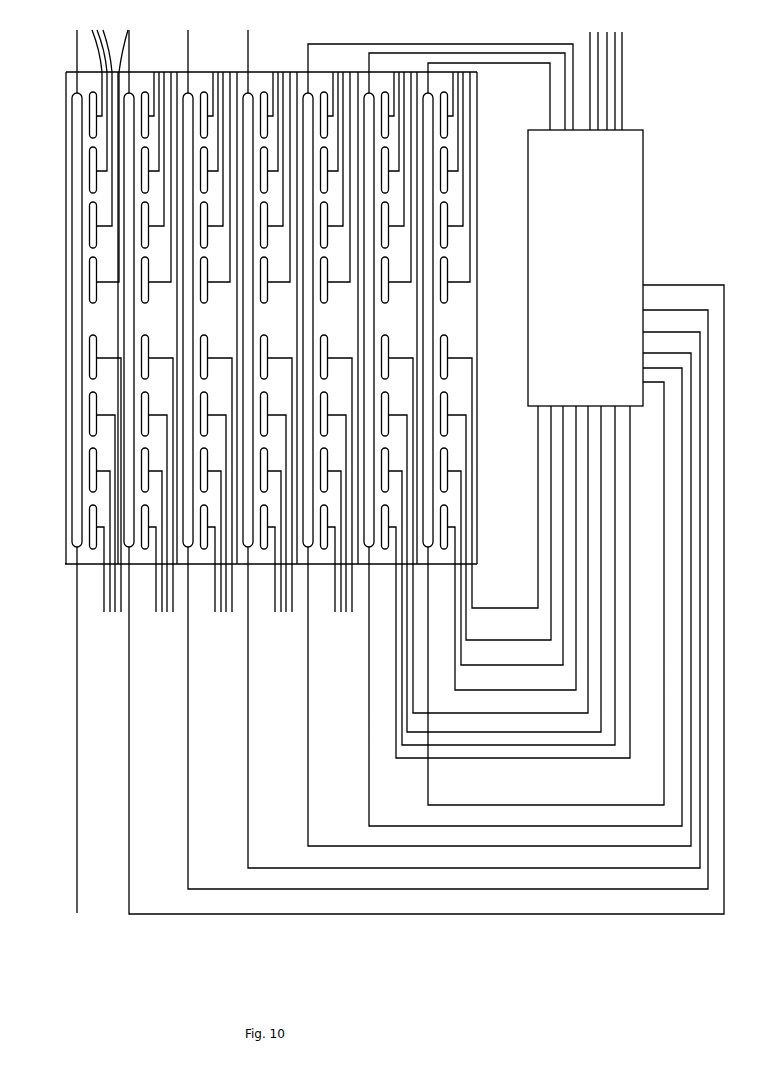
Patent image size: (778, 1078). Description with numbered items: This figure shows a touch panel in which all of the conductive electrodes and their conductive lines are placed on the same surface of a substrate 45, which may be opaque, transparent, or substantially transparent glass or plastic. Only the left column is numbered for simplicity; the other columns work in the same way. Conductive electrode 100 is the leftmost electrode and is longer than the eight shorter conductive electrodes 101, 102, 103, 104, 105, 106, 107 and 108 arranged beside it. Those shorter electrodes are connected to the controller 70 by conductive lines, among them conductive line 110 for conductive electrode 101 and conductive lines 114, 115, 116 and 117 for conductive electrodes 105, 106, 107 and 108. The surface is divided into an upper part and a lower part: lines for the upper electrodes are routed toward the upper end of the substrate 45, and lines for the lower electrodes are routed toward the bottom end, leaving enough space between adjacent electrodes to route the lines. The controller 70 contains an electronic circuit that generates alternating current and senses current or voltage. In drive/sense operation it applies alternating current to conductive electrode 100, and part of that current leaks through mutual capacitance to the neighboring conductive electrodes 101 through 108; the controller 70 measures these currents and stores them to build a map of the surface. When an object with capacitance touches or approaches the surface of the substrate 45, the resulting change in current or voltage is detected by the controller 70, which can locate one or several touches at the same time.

The conductive electrode 100 is at (362, 472).
The conductive line 110 is at (64, 40).
The conductive electrode 101 is at (91, 120).
The conductive electrode 102 is at (91, 174).
The conductive electrode 103 is at (91, 229).
The conductive electrode 104 is at (91, 284).
The conductive electrode 105 is at (91, 360).
The conductive electrode 106 is at (91, 417).
The conductive electrode 107 is at (80, 468).
The conductive electrode 108 is at (84, 571).
The substrate 45 is at (58, 528).
The conductive line 114 is at (121, 612).
The conductive line 115 is at (115, 612).
The conductive line 116 is at (110, 612).
The conductive line 117 is at (103, 612).
The controller 70 is at (632, 128).